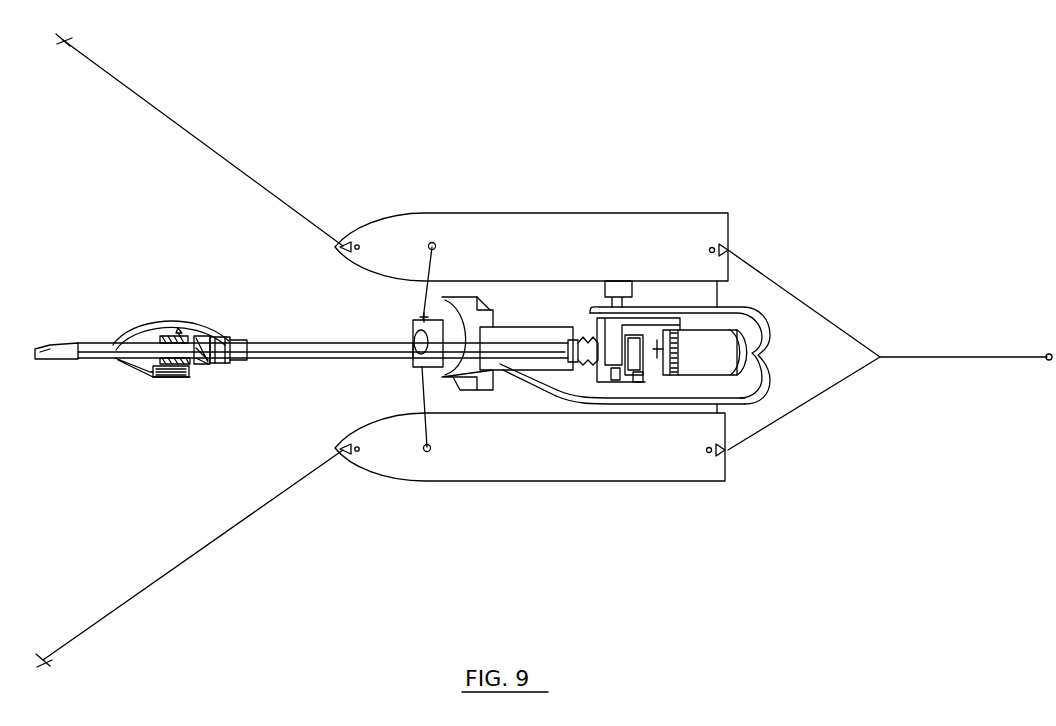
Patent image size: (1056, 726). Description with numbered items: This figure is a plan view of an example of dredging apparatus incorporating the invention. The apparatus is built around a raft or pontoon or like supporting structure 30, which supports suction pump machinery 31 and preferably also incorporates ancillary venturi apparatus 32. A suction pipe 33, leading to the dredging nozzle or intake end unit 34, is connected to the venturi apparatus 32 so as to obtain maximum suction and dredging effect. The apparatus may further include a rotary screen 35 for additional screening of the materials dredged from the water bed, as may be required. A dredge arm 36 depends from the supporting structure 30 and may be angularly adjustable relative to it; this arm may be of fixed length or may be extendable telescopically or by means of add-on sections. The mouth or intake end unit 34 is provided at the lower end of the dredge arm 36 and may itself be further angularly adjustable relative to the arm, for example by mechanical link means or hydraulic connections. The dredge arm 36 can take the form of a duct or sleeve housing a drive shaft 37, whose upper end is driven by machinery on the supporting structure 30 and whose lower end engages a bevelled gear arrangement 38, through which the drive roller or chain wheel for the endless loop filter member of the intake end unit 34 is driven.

The supporting structure 30 is at (618, 212).
The suction pump machinery 31 is at (637, 383).
The ancillary venturi apparatus 32 is at (768, 358).
The suction pipe 33 is at (160, 327).
The intake end unit 34 is at (95, 341).
The rotary screen 35 is at (713, 352).
The dredge arm 36 is at (328, 335).
The drive shaft 37 is at (205, 346).
The bevelled gear arrangement 38 is at (190, 338).